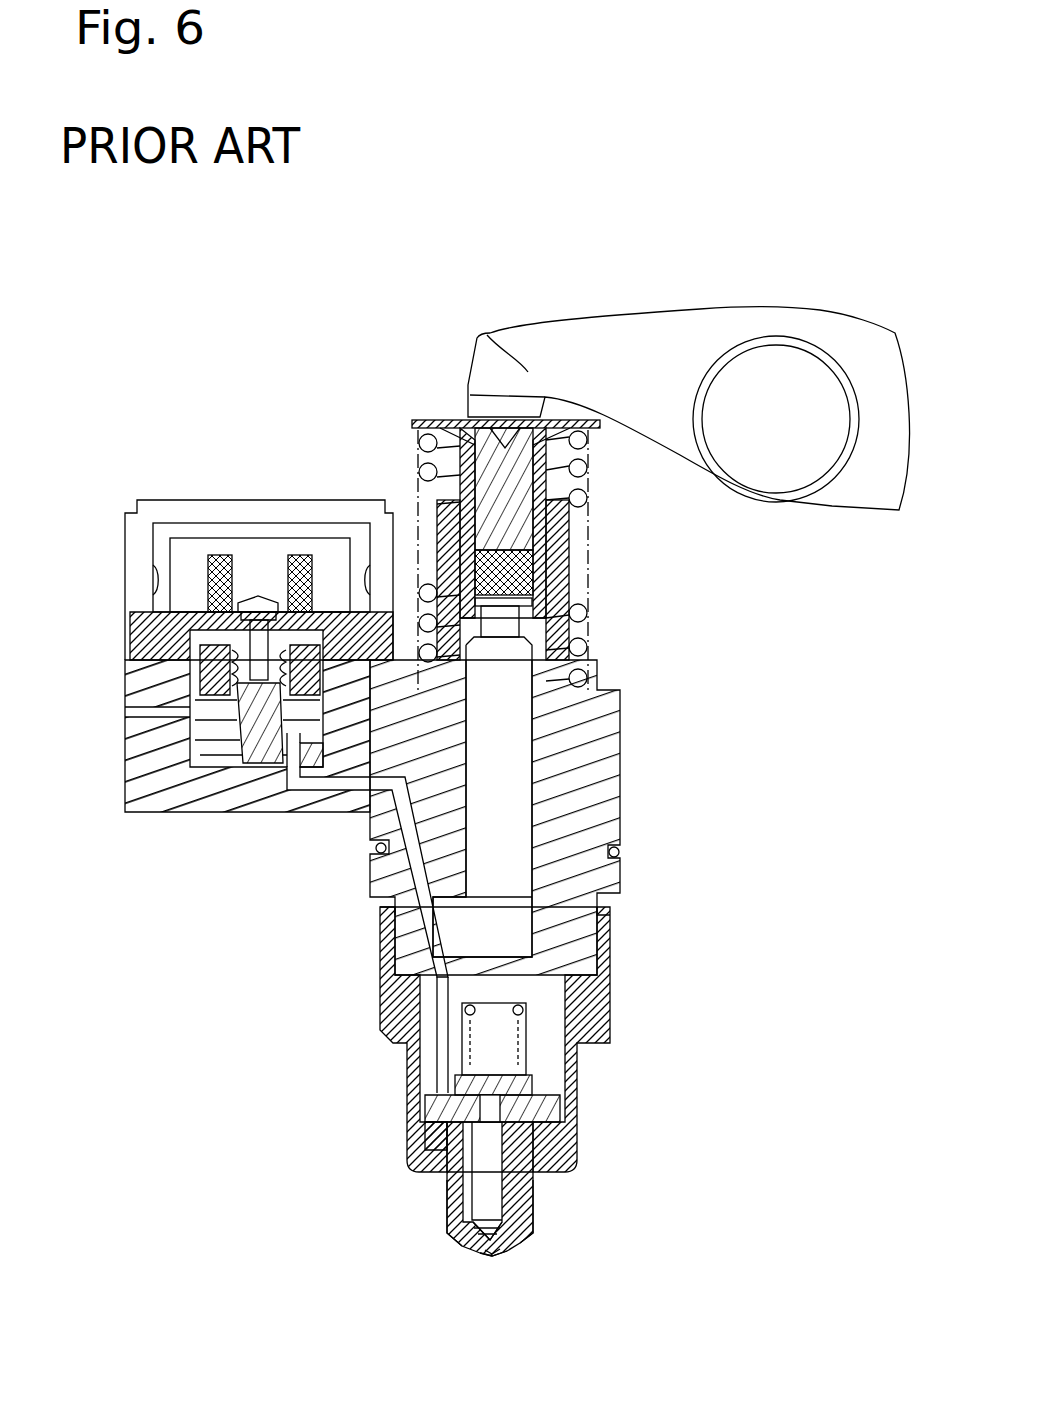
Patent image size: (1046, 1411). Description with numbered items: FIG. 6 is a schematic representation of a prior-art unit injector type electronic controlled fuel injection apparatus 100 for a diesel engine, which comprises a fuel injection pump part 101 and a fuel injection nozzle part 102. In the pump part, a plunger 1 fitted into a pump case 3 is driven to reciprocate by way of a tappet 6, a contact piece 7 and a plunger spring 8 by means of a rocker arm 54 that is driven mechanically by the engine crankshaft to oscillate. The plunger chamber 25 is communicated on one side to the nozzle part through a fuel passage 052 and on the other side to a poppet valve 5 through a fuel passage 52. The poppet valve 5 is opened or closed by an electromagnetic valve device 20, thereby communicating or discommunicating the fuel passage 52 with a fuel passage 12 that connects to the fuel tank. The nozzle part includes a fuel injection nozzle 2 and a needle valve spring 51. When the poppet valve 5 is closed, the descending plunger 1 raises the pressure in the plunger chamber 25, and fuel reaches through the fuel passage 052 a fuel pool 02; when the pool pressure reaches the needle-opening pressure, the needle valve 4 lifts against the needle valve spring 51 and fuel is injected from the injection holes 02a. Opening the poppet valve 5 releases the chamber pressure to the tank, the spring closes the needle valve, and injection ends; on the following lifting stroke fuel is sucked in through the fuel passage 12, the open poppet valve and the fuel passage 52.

The unit injector type electronic controlled fuel injection apparatus 100 is at (656, 757).
The plunger 1 is at (510, 820).
The fuel injection nozzle 2 is at (528, 1203).
The pump case 3 is at (620, 708).
The needle valve 4 is at (498, 1155).
The poppet valve 5 is at (213, 762).
The tappet 6 is at (533, 570).
The contact piece 7 is at (445, 422).
The plunger spring 8 is at (532, 618).
The fuel passage 12 is at (125, 710).
The electromagnetic valve device 20 is at (165, 515).
The plunger chamber 25 is at (610, 925).
The needle valve spring 51 is at (527, 1045).
The fuel passage 52 is at (370, 897).
The rocker arm 54 is at (489, 335).
The fuel injection pump part 101 is at (620, 873).
The fuel injection nozzle part 102 is at (418, 1137).
The fuel passage 052 is at (447, 1195).
The fuel pool 02 is at (538, 1240).
The injection holes 02a is at (473, 1250).